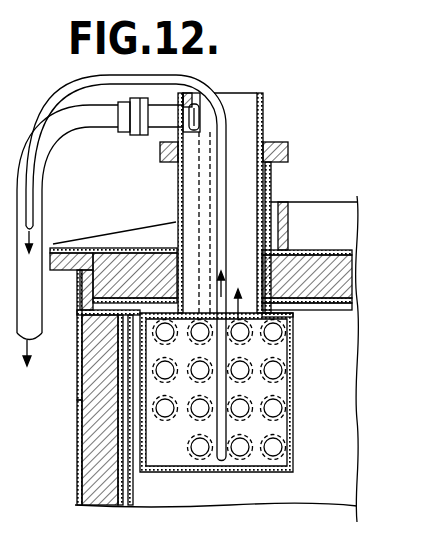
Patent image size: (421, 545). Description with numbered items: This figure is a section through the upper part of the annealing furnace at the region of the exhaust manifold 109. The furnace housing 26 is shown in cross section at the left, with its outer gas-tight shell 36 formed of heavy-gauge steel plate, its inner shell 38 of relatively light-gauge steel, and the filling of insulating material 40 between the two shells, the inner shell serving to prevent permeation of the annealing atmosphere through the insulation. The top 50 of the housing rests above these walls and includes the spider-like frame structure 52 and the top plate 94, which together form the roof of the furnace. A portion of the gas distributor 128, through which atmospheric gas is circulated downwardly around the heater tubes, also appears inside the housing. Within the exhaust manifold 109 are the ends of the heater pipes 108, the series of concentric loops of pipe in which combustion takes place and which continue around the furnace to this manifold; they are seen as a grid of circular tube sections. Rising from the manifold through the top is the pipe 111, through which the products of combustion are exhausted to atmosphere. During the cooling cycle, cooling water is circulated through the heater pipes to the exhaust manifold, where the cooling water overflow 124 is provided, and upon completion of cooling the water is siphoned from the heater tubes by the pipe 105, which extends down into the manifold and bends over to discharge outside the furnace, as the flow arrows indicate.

The siphon pipe 105 is at (209, 82).
The exhaust pipe 111 is at (266, 108).
The spider-like frame structure 52 is at (285, 213).
The top 50 is at (344, 246).
The cooling water overflow 124 is at (78, 127).
The top plate 94 is at (92, 250).
The gas distributor 128 is at (131, 372).
The furnace housing 26 is at (70, 403).
The outer gas-tight shell 36 is at (76, 480).
The insulating material 40 is at (100, 440).
The inner shell 38 is at (121, 483).
The heater pipes 108 is at (279, 444).
The exhaust manifold 109 is at (266, 466).